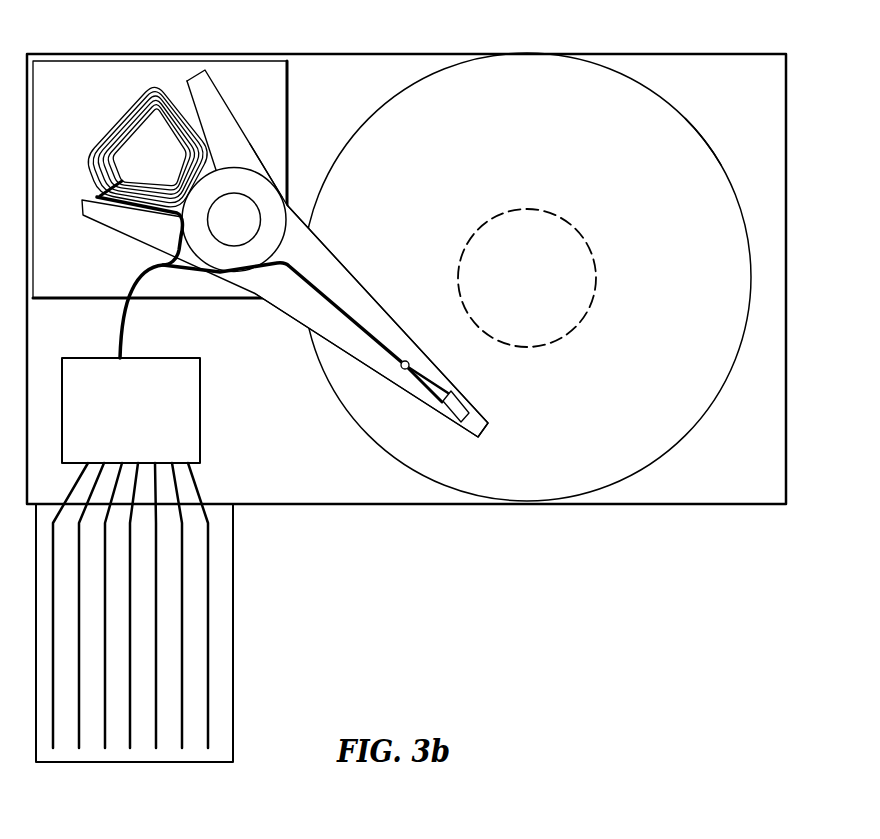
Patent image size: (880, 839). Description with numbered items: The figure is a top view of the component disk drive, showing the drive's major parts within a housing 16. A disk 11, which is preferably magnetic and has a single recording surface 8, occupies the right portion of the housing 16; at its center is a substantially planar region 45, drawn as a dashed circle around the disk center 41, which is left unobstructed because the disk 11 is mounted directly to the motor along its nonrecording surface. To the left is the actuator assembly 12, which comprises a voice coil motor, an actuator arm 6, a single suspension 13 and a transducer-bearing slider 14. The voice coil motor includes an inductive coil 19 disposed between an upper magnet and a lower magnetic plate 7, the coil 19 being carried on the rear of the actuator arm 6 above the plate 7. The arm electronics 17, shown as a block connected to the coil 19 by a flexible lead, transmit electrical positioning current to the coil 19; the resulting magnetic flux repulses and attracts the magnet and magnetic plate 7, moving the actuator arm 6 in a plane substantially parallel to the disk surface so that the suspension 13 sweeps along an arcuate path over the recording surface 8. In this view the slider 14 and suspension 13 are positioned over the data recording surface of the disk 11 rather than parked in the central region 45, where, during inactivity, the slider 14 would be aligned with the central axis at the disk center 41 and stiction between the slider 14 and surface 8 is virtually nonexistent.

The actuator arm 6 is at (228, 120).
The lower magnetic plate 7 is at (63, 246).
The recording surface 8 is at (592, 168).
The disk 11 is at (700, 132).
The actuator assembly 12 is at (266, 161).
The suspension 13 is at (363, 295).
The transducer-bearing slider 14 is at (455, 402).
The housing 16 is at (737, 54).
The arm electronics 17 is at (200, 417).
The inductive coil 19 is at (120, 110).
The disk center 41 is at (536, 271).
The planar region 45 is at (578, 270).